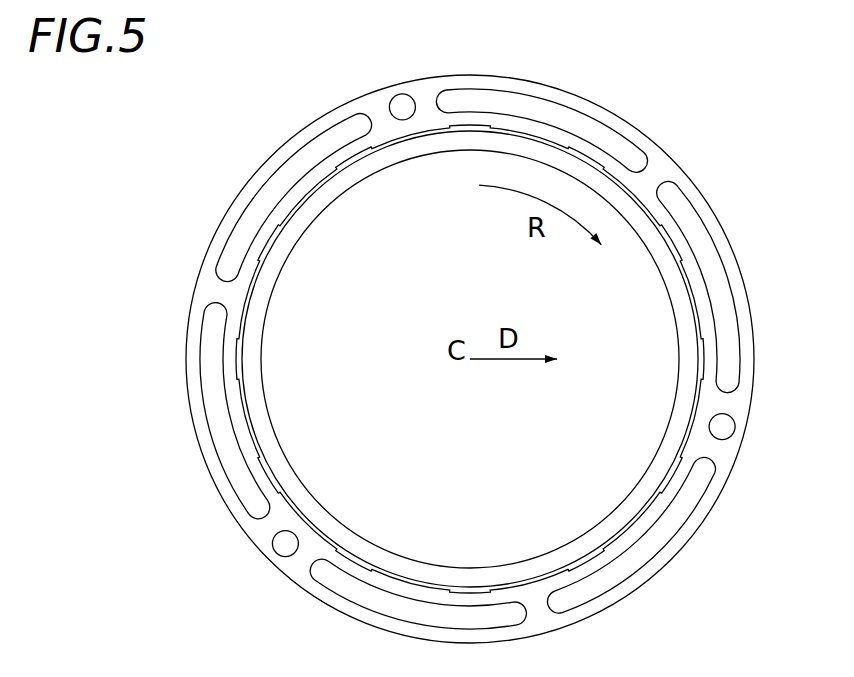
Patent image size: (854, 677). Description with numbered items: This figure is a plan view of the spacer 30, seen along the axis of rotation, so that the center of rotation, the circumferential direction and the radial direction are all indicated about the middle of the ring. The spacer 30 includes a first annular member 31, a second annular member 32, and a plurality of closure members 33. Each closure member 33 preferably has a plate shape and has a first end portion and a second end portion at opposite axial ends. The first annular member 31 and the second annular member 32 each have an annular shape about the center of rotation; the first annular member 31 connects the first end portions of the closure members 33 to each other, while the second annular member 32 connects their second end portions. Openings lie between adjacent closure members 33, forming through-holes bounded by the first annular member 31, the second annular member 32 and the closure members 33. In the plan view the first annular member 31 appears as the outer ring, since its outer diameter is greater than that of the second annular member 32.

The spacer 30 is at (222, 152).
The first annular member 31 is at (700, 193).
The second annular member 32 is at (308, 227).
The closure members 33 is at (250, 302).